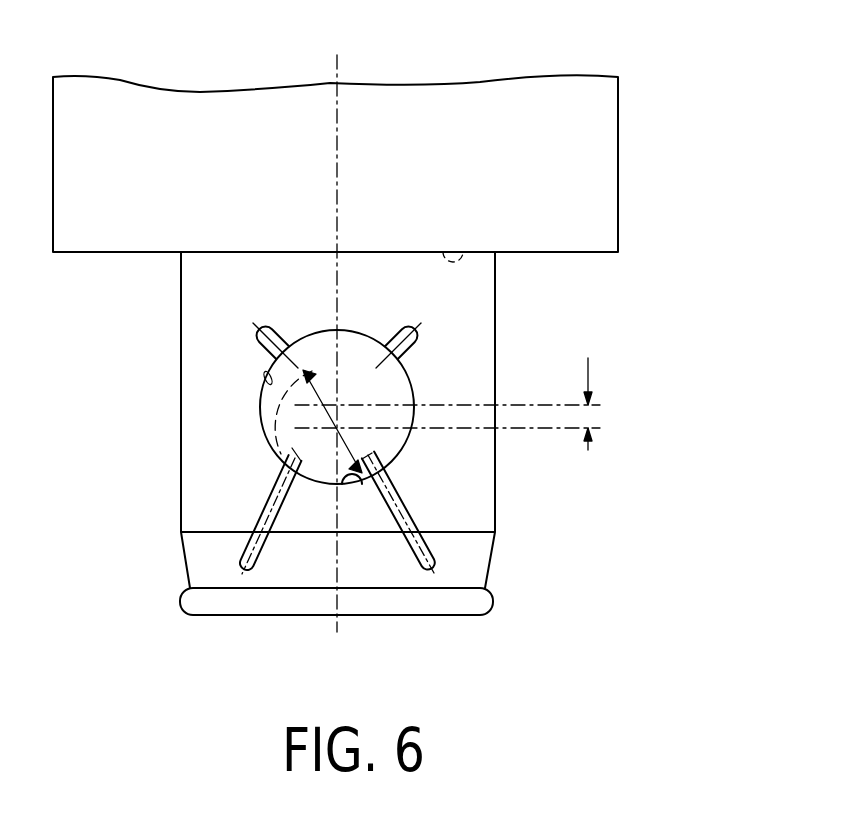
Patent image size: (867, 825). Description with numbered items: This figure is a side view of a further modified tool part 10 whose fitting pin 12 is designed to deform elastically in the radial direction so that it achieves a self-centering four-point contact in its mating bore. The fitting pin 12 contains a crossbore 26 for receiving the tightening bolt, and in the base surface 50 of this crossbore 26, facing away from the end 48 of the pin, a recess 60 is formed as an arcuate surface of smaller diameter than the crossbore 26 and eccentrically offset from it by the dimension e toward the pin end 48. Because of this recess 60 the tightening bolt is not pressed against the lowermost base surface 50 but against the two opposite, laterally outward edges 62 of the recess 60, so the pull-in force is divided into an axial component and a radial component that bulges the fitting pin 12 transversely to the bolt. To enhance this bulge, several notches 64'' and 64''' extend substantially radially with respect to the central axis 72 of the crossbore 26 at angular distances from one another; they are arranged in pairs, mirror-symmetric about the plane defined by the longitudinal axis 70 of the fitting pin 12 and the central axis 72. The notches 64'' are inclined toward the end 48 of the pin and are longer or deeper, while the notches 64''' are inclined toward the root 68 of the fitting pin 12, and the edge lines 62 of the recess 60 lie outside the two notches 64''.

The tool part 10 is at (481, 126).
The fitting pin 12 is at (455, 321).
The crossbore 26 is at (266, 380).
The end of the pin 48 is at (408, 616).
The base surface 50 is at (362, 490).
The recess 60 is at (303, 489).
The edges of the recess 62 is at (292, 448).
The notches 64'' is at (300, 514).
The notches 64''' is at (337, 316).
The root of the fitting pin 68 is at (458, 259).
The longitudinal axis of the fitting pin 70 is at (338, 272).
The central axis of the crossbore 72 is at (320, 422).